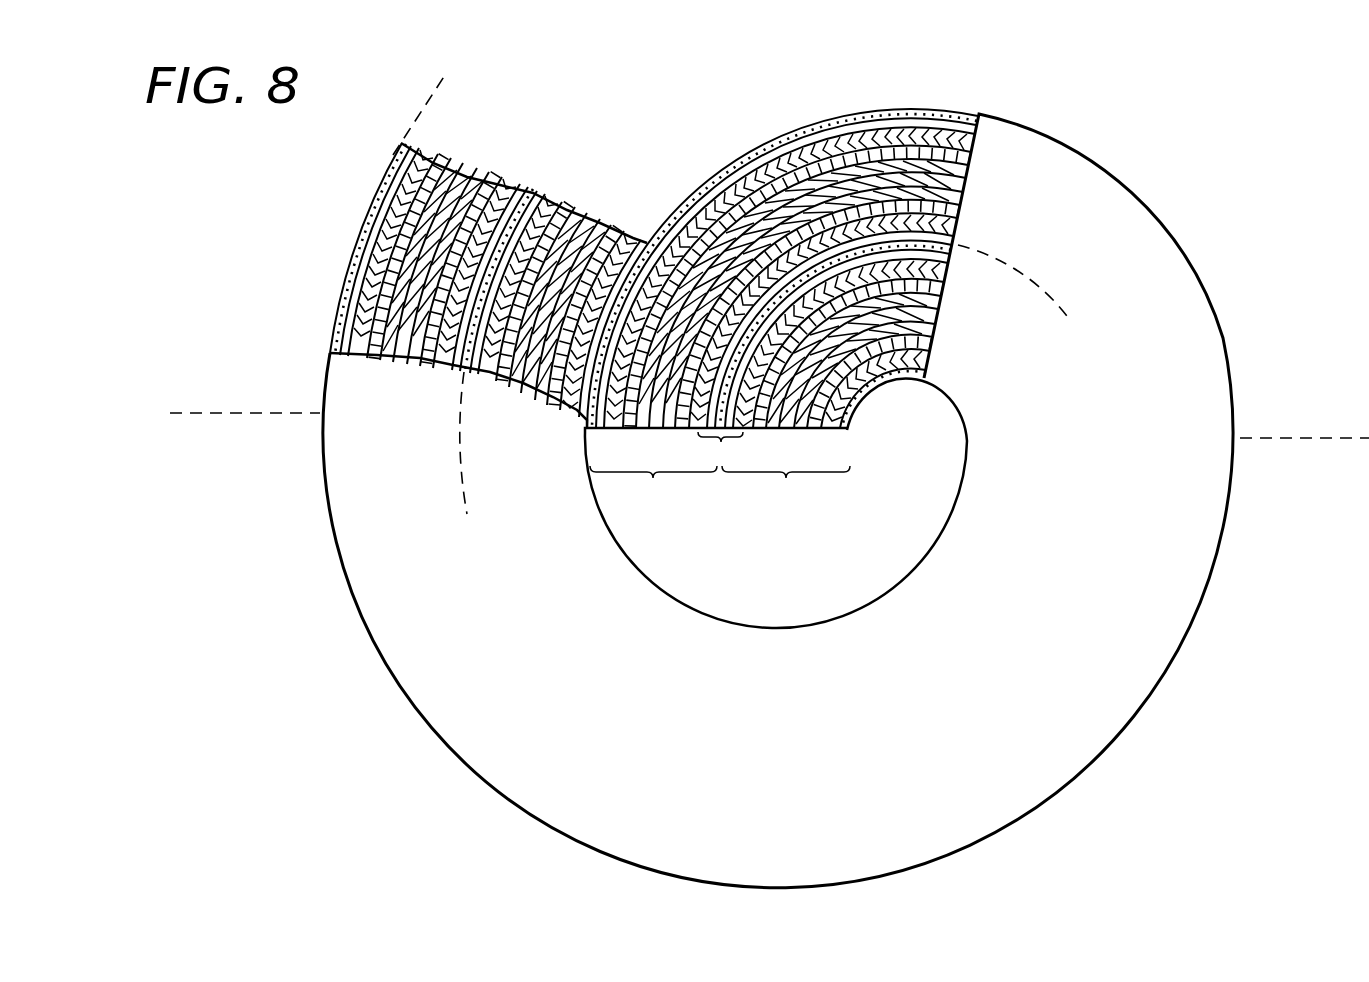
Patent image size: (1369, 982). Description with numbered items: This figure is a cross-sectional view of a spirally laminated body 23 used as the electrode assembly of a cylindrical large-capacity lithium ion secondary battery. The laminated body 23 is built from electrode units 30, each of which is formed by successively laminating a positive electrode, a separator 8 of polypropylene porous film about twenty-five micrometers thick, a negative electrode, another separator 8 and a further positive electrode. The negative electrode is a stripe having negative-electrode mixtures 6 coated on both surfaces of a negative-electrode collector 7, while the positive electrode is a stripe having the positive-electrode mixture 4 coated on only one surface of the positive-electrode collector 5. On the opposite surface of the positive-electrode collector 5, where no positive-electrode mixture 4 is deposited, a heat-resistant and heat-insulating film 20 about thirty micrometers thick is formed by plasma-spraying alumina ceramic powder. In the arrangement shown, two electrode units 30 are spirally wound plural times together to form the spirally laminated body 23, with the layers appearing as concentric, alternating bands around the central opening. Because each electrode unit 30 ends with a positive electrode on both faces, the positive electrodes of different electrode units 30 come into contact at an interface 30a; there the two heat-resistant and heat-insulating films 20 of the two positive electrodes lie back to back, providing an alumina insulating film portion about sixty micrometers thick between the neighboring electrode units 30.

The positive-electrode mixture 4 is at (661, 265).
The positive-electrode collector 5 is at (658, 273).
The negative-electrode mixture 6 is at (674, 244).
The negative-electrode collector 7 is at (679, 269).
The separator 8 is at (669, 253).
The heat-resistant and heat-insulating film 20 is at (646, 268).
The spirally laminated body 23 is at (1290, 609).
The electrode unit 30 is at (720, 489).
The interface 30a is at (721, 452).